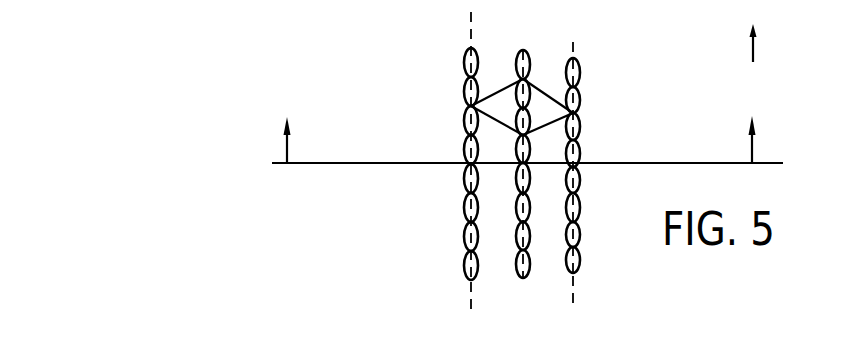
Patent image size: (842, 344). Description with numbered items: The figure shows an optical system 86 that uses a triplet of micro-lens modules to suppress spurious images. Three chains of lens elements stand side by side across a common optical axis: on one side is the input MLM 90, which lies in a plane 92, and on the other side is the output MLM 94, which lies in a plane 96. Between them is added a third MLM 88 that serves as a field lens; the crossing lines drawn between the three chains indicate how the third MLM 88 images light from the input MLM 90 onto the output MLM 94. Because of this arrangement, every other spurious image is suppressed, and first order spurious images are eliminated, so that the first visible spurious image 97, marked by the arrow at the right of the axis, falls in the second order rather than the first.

The optical system 86 is at (344, 49).
The third MLM 88 is at (524, 50).
The input MLM 90 is at (467, 279).
The plane 92 is at (471, 42).
The output MLM 94 is at (577, 268).
The plane 96 is at (573, 42).
The first visible spurious image 97 is at (753, 55).